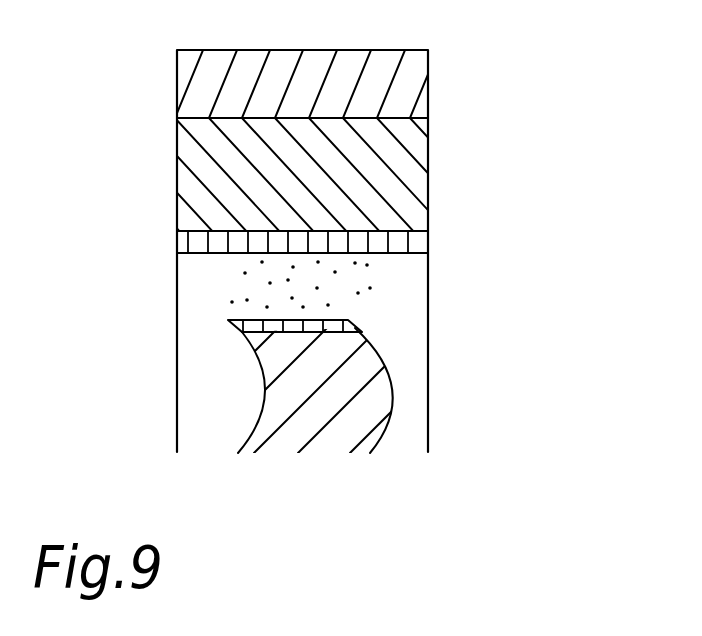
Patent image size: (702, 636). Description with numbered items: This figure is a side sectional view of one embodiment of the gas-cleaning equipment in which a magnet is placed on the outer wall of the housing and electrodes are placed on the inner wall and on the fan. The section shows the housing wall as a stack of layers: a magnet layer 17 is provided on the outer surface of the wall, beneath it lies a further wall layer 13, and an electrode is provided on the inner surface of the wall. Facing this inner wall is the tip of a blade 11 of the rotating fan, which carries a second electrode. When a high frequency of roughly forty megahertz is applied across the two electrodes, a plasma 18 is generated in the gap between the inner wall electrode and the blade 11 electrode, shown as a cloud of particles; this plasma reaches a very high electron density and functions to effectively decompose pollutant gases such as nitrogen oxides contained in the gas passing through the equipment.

The magnet layer 17 is at (415, 92).
The intermediate layer 13 is at (410, 183).
The plasma 18 is at (235, 283).
The blade 11 is at (365, 410).